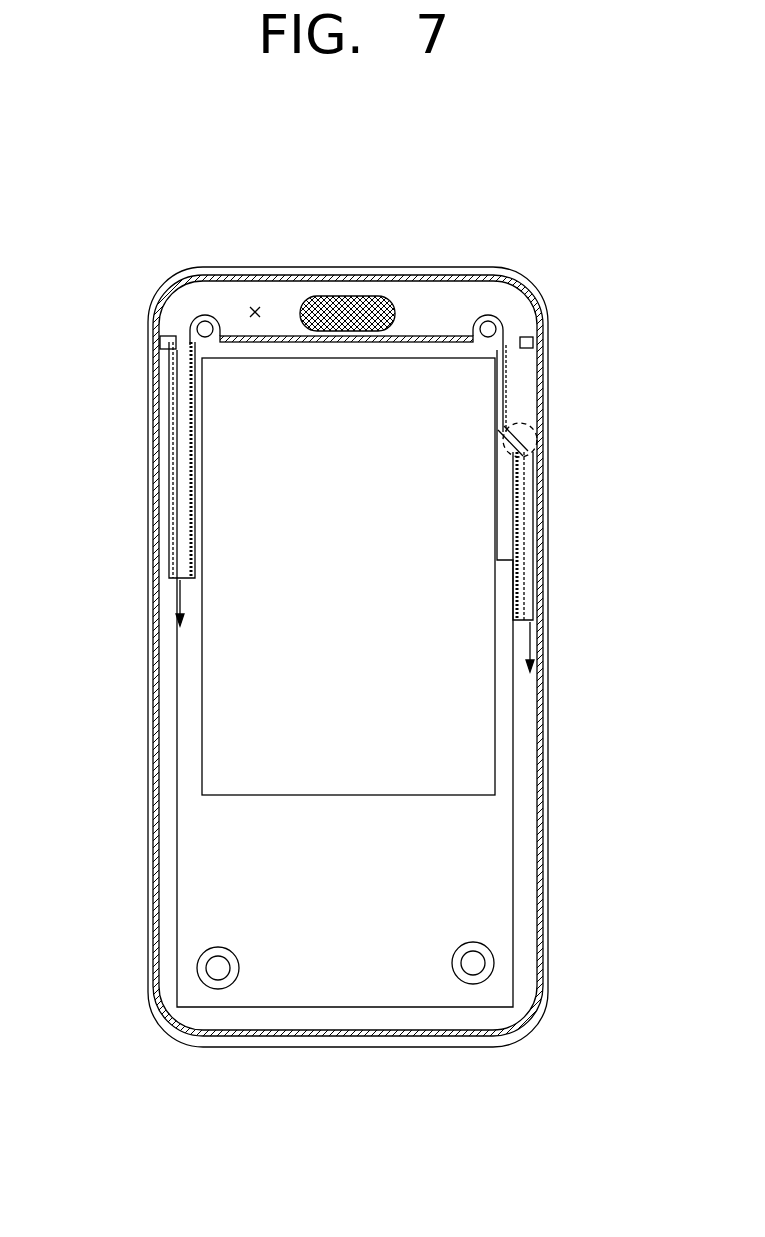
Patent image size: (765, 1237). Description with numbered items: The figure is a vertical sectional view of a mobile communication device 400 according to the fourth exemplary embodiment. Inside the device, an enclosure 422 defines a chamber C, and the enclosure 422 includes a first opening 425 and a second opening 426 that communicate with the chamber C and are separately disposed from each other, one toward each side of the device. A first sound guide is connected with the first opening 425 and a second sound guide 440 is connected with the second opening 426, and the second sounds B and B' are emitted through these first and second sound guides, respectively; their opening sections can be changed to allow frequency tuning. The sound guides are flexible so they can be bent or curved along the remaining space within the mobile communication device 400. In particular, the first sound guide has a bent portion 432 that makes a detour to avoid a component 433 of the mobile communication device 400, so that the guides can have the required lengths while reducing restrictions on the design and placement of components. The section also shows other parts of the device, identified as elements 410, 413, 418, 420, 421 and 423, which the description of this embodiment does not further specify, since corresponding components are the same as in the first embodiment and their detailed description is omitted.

The mobile communication device 400 is at (593, 242).
The case 410 is at (545, 915).
The display unit 413 is at (485, 742).
The frame plate 418 is at (505, 835).
The front cover / window 420 is at (335, 272).
The speaker hole 421 is at (385, 295).
The enclosure 422 is at (203, 314).
The second coupling boss 423 is at (488, 314).
The first opening 425 is at (534, 343).
The second opening 426 is at (158, 345).
The bent portion 432 is at (540, 440).
The component 433 is at (515, 517).
The second sound guide 440 is at (172, 488).
The chamber C is at (255, 305).
The second sound B is at (526, 660).
The second sound B' is at (182, 618).